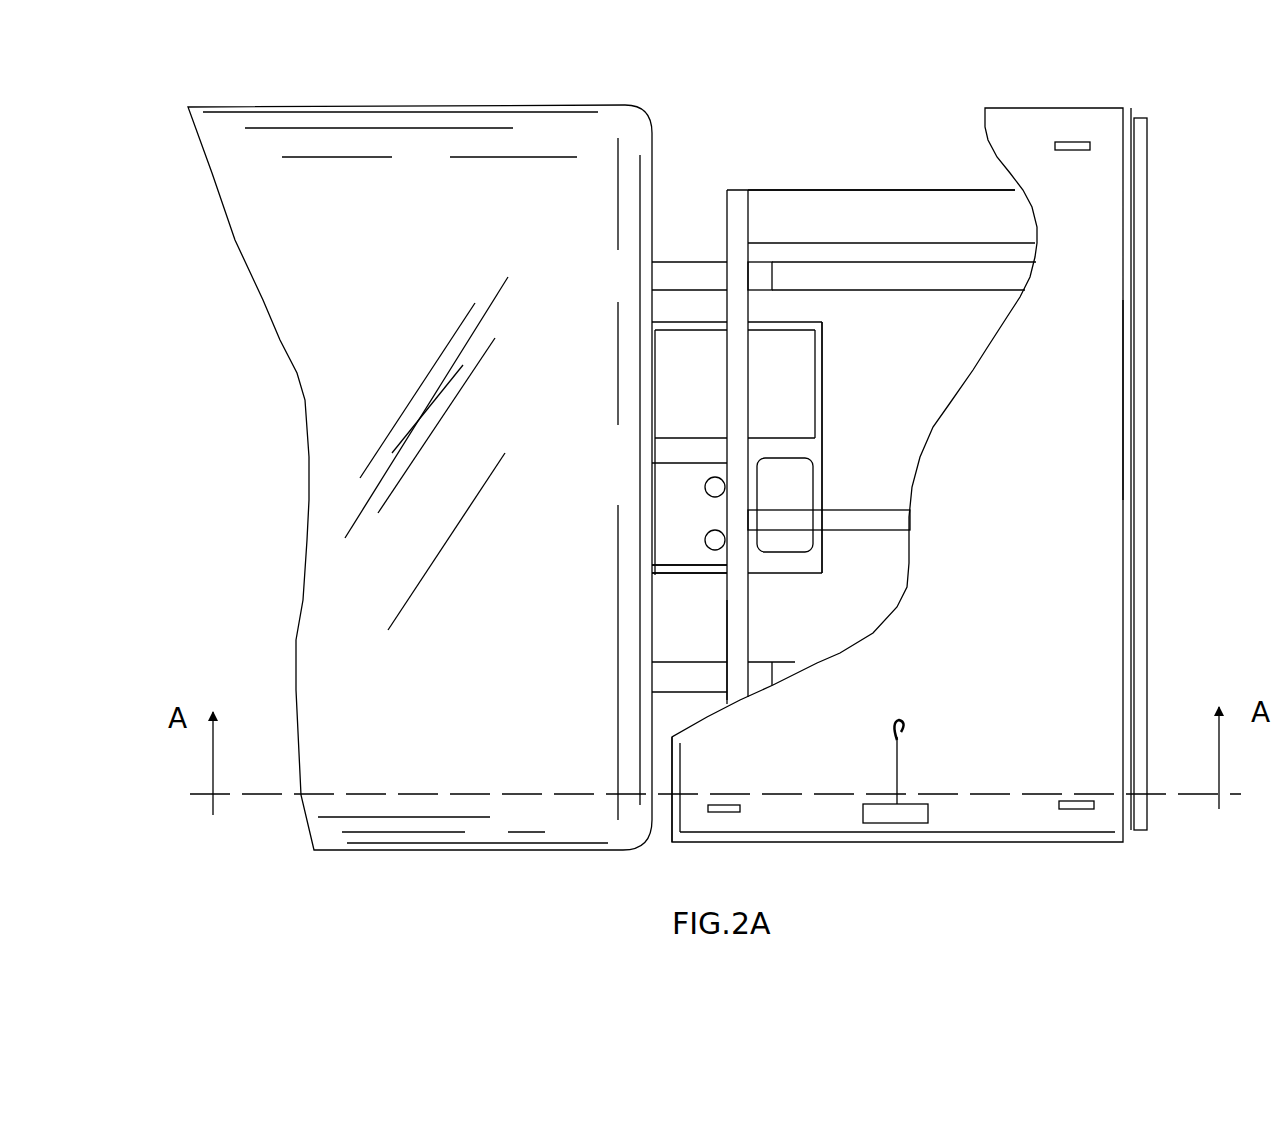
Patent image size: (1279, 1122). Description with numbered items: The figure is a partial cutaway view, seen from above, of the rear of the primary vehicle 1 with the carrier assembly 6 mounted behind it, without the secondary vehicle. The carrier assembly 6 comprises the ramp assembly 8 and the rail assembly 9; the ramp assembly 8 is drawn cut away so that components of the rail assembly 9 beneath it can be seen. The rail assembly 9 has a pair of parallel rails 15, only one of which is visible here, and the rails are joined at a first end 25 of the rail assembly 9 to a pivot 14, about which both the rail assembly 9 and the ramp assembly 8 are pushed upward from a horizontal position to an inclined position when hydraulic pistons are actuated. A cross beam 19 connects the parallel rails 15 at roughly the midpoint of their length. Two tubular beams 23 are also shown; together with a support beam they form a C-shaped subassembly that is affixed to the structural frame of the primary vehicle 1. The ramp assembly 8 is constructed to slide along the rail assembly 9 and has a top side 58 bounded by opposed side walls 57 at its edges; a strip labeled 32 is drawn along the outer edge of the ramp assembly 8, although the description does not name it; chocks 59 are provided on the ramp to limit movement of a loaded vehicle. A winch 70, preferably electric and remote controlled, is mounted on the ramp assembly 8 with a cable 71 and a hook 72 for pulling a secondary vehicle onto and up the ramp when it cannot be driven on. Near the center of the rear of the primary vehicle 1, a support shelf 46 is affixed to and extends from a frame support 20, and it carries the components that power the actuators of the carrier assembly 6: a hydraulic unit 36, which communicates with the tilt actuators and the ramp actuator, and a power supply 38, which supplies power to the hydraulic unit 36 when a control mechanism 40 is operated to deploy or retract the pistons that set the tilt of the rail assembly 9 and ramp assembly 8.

The primary vehicle 1 is at (452, 105).
The carrier assembly 6 is at (1165, 329).
The ramp assembly 8 is at (1097, 107).
The rail assembly 9 is at (787, 188).
The pivot 14 is at (813, 190).
The parallel rail 15 is at (725, 614).
The cross beam 19 is at (850, 532).
The frame support 20 is at (665, 263).
The tubular beam 23 is at (947, 263).
The first end 25 is at (727, 212).
The edge rail 32 is at (1148, 133).
The hydraulic unit 36 is at (765, 352).
The power supply 38 is at (717, 565).
The control mechanism 40 is at (815, 488).
The support shelf 46 is at (823, 348).
The side wall 57 is at (683, 760).
The top side 58 is at (1047, 588).
The chock 59 is at (1073, 150).
The winch 70 is at (929, 815).
The cable 71 is at (897, 778).
The hook 72 is at (901, 736).